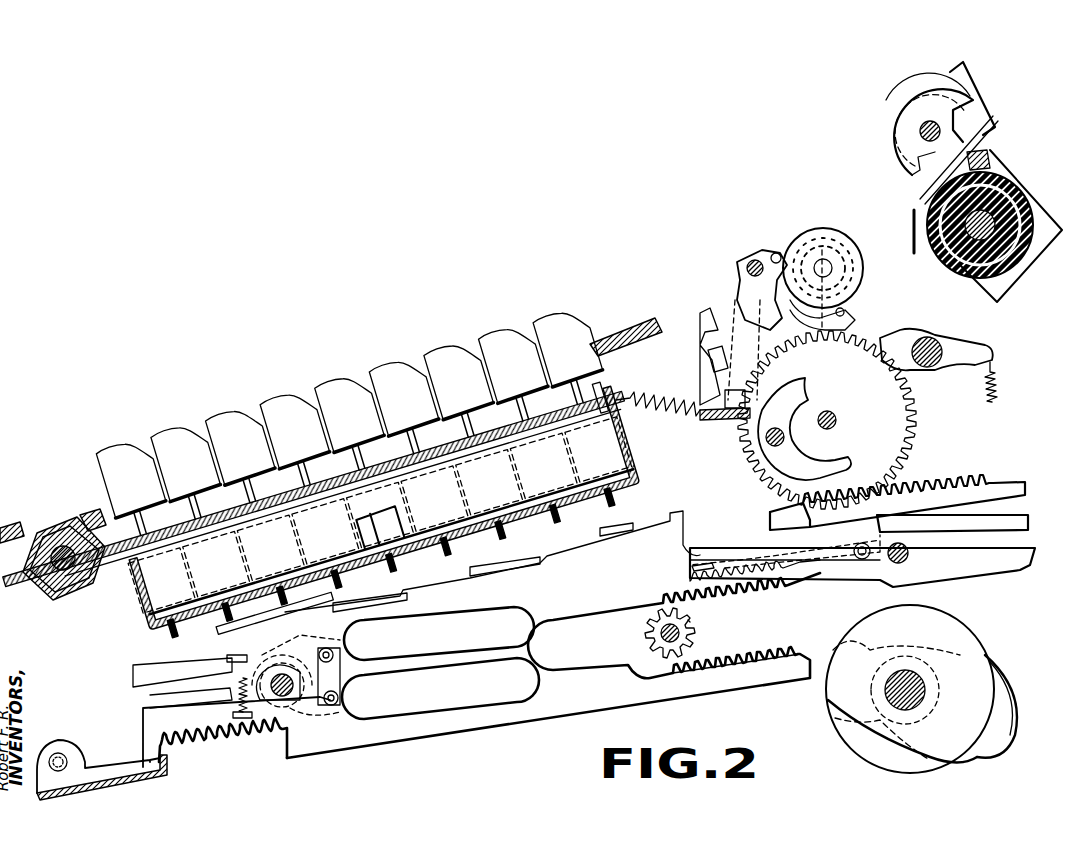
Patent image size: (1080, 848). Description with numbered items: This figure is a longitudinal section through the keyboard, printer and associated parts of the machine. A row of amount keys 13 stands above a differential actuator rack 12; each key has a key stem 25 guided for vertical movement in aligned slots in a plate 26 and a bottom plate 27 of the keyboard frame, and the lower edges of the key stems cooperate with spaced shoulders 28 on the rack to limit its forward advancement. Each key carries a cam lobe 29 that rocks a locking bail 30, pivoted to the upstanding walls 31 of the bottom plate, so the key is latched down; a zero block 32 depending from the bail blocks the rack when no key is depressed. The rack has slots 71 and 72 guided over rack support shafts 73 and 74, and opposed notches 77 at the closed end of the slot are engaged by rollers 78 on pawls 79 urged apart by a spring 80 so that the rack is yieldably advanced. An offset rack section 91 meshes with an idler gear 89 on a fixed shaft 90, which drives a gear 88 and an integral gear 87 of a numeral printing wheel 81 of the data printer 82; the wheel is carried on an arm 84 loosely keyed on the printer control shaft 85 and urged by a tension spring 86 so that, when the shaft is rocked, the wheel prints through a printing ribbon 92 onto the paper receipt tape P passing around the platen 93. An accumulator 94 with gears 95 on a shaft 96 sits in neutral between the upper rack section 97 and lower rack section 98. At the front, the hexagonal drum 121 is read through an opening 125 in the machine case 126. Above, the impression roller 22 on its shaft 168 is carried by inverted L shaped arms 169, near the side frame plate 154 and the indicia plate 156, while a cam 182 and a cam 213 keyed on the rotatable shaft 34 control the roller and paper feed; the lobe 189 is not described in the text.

The differential actuator rack 12 is at (510, 722).
The amount key 13 is at (430, 350).
The impression roller 22 is at (886, 106).
The key stem 25 is at (418, 449).
The plate 26 is at (300, 482).
The bottom plate 27 is at (318, 550).
The shoulder 28 is at (345, 598).
The cam lobe 29 is at (395, 515).
The locking bail 30 is at (415, 548).
The upstanding wall 31 is at (632, 440).
The zero block 32 is at (250, 632).
The rotatable shaft 34 is at (925, 692).
The slot 71 is at (145, 712).
The slot 72 is at (987, 552).
The rack support shaft 73 is at (300, 708).
The rack support shaft 74 is at (890, 560).
The notch 77 is at (328, 636).
The roller 78 is at (336, 678).
The pawl 79 is at (225, 662).
The spring 80 is at (238, 690).
The numeral printing wheel 81 is at (856, 258).
The data printer 82 is at (800, 228).
The arm 84 is at (915, 335).
The printer control shaft 85 is at (935, 342).
The tension spring 86 is at (998, 378).
The gear 87 is at (822, 250).
The gear 88 is at (855, 300).
The idler gear 89 is at (915, 425).
The fixed shaft 90 is at (838, 421).
The offset rack section 91 is at (968, 485).
The printing ribbon 92 is at (911, 223).
The platen 93 is at (1025, 193).
The accumulator 94 is at (635, 636).
The gear 95 is at (690, 625).
The shaft 96 is at (683, 637).
The upper rack section 97 is at (770, 592).
The lower rack section 98 is at (776, 655).
The drum 121 is at (73, 600).
The opening 125 is at (68, 510).
The machine case 126 is at (14, 520).
The side frame plate 154 is at (985, 117).
The plate 156 is at (992, 156).
The shaft 168 is at (920, 131).
The inverted L shaped arm 169 is at (960, 72).
The cam 182 is at (848, 716).
The cam lobe 189 is at (1000, 740).
The cam 213 is at (862, 730).
The paper receipt tape P is at (955, 275).